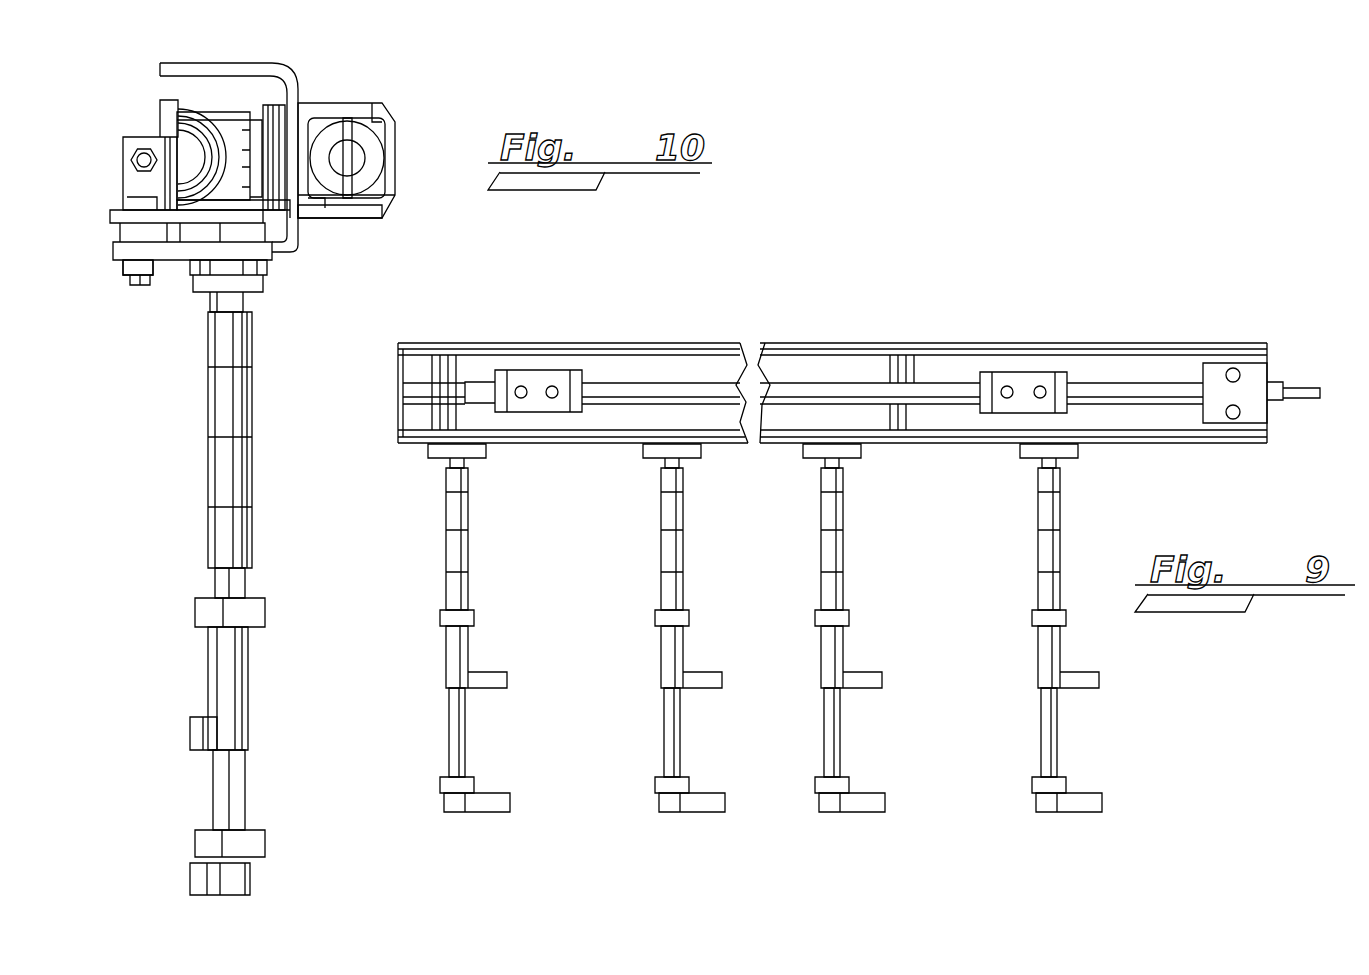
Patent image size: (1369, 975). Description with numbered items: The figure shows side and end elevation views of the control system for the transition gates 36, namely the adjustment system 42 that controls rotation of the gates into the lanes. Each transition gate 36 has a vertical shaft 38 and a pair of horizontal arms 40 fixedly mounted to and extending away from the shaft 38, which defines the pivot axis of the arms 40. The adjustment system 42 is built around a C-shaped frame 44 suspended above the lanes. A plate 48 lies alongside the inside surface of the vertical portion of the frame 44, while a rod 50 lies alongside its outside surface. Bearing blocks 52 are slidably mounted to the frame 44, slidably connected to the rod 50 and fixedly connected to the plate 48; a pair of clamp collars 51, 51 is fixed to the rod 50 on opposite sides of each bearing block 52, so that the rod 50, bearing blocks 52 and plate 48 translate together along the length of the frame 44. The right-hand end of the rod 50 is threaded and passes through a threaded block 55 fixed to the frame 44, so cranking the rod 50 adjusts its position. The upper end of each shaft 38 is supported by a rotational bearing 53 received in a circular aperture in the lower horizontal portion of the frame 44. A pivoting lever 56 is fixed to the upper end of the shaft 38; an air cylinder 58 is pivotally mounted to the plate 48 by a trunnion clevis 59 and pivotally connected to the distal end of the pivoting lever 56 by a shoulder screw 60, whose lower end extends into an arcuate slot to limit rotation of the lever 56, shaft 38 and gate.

In FIG. 10, the transition gate 36 is at (272, 774).
In FIG. 9, the transition gate 36 is at (435, 707).
In FIG. 10, the vertical shaft 38 is at (227, 670).
In FIG. 9, the vertical shaft 38 is at (467, 723).
In FIG. 10, the horizontal arms 40 is at (190, 733).
In FIG. 9, the horizontal arms 40 is at (483, 677).
In FIG. 10, the adjustment system 42 is at (78, 165).
In FIG. 9, the adjustment system 42 is at (815, 300).
In FIG. 10, the C-shaped frame 44 is at (186, 66).
In FIG. 9, the C-shaped frame 44 is at (920, 343).
In FIG. 10, the plate 48 is at (309, 118).
In FIG. 10, the rod 50 is at (350, 158).
In FIG. 9, the rod 50 is at (657, 383).
In FIG. 10, the clamp collars 51 is at (375, 175).
In FIG. 9, the clamp collars 51 is at (575, 440).
In FIG. 10, the bearing blocks 52 is at (288, 135).
In FIG. 9, the bearing blocks 52 is at (533, 370).
In FIG. 10, the rotational bearing 53 is at (268, 307).
In FIG. 9, the rotational bearing 53 is at (423, 460).
In FIG. 10, the threaded block 55 is at (362, 215).
In FIG. 9, the threaded block 55 is at (1213, 372).
In FIG. 10, the pivoting lever 56 is at (160, 250).
In FIG. 10, the air cylinder 58 is at (157, 115).
In FIG. 10, the trunnion clevis 59 is at (196, 108).
In FIG. 10, the shoulder screw 60 is at (137, 263).